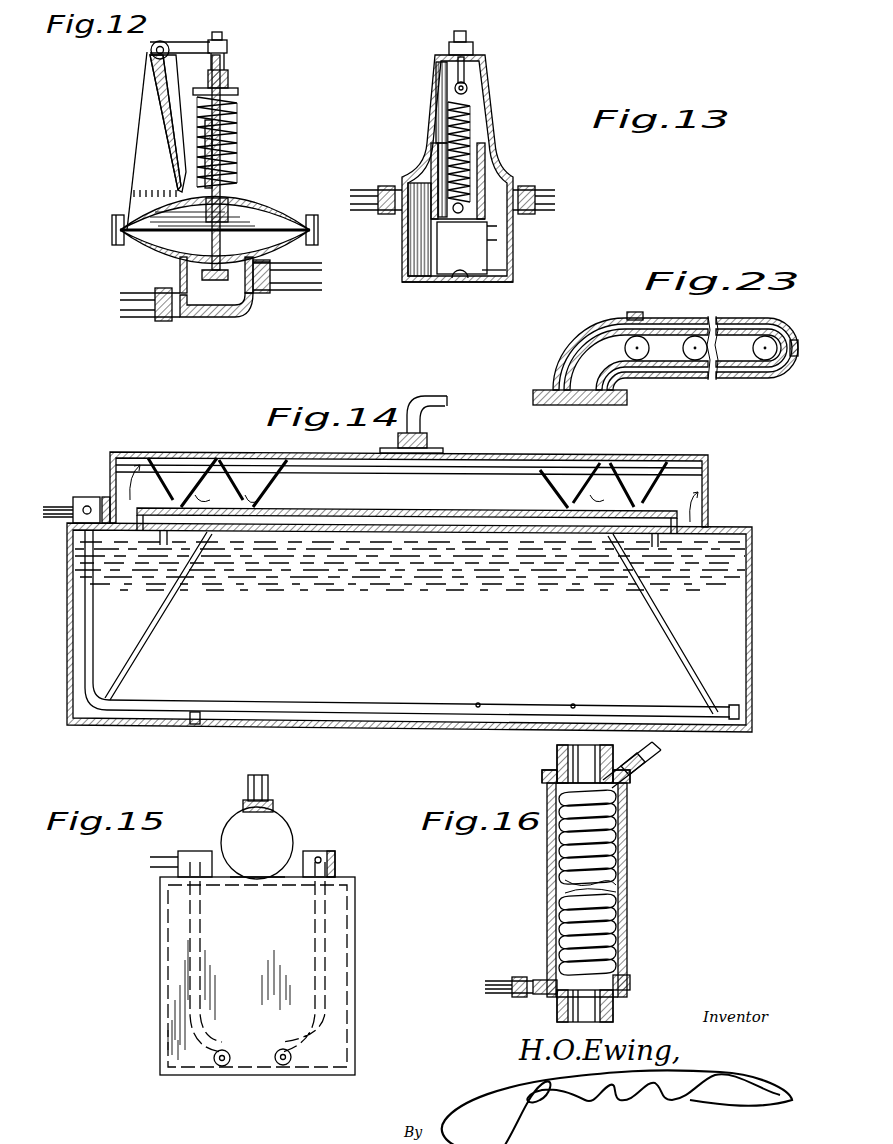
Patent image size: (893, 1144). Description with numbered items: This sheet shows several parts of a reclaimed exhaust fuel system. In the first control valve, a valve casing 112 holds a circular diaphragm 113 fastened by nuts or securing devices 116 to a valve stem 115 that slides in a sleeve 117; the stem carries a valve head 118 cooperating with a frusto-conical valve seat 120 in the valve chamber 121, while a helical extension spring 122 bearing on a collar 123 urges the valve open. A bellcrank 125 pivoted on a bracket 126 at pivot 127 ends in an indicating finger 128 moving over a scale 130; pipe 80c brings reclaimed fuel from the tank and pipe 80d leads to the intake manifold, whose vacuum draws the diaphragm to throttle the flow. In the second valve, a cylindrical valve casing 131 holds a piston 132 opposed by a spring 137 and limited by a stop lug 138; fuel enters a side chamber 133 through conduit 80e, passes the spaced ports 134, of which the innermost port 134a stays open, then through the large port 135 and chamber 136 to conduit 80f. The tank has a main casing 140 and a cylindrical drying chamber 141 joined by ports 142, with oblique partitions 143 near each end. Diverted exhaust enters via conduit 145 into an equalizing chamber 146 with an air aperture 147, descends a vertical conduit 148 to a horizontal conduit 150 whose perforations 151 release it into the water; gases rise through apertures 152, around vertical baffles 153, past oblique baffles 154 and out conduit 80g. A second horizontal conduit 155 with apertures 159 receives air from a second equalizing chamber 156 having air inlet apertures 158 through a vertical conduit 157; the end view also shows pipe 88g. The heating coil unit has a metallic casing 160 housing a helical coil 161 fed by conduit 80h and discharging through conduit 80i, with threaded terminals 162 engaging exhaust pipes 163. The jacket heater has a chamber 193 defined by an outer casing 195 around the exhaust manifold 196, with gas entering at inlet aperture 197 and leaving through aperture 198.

In FIG. 12, the valve casing 112 is at (255, 220).
In FIG. 12, the circular diaphragm 113 is at (283, 224).
In FIG. 12, the valve stem 115 is at (222, 129).
In FIG. 12, the nuts or securing devices 116 is at (228, 196).
In FIG. 12, the sleeve 117 is at (226, 160).
In FIG. 12, the valve head 118 is at (201, 276).
In FIG. 12, the frusto-conical valve seat 120 is at (214, 309).
In FIG. 12, the valve chamber 121 is at (241, 294).
In FIG. 12, the helical extension spring 122 is at (238, 104).
In FIG. 12, the collar 123 is at (232, 89).
In FIG. 12, the bellcrank 125 is at (151, 56).
In FIG. 12, the bracket 126 is at (145, 96).
In FIG. 12, the pivot 127 is at (165, 45).
In FIG. 12, the index or indicating finger 128 is at (168, 172).
In FIG. 12, the scale 130 is at (135, 194).
In FIG. 12, the pipe 80c is at (286, 288).
In FIG. 12, the pipe or conduit 80d is at (142, 309).
In FIG. 13, the cylindrical valve casing 131 is at (476, 115).
In FIG. 13, the piston 132 is at (474, 160).
In FIG. 13, the chamber 133 is at (498, 255).
In FIG. 13, the ports or apertures 134 is at (490, 240).
In FIG. 13, the innermost port 134a is at (507, 271).
In FIG. 13, the port 135 is at (425, 284).
In FIG. 13, the chamber 136 is at (418, 242).
In FIG. 13, the spring 137 is at (467, 100).
In FIG. 13, the stop lug 138 is at (465, 280).
In FIG. 13, the pipe or conduit 80e is at (555, 197).
In FIG. 13, the pipe or conduit 80f is at (363, 194).
In FIG. 23, the chamber 193 is at (748, 331).
In FIG. 23, the outer wall or casing 195 is at (727, 380).
In FIG. 23, the exhaust manifold 196 is at (677, 335).
In FIG. 23, the inlet aperture 197 is at (794, 368).
In FIG. 23, the aperture 198 is at (626, 316).
In FIG. 14, the main casing 140 is at (753, 678).
In FIG. 14, the cylindrical drying chamber 141 is at (524, 467).
In FIG. 15, the cylindrical drying chamber 141 is at (283, 833).
In FIG. 14, the apertures or ports 142 is at (138, 488).
In FIG. 14, the obliquely disposed partitions or plates 143 is at (170, 600).
In FIG. 14, the conduit 145 is at (53, 518).
In FIG. 15, the conduit 145 is at (160, 860).
In FIG. 14, the equalizing chamber 146 is at (100, 497).
In FIG. 15, the equalizing chamber 146 is at (204, 849).
In FIG. 14, the aperture 147 is at (86, 506).
In FIG. 15, the aperture 147 is at (224, 857).
In FIG. 14, the vertical conduit 148 is at (88, 634).
In FIG. 15, the vertical conduit 148 is at (190, 1008).
In FIG. 14, the horizontally-disposed conduit 150 is at (357, 703).
In FIG. 15, the horizontally-disposed conduit 150 is at (226, 1050).
In FIG. 14, the perforations 151 is at (208, 713).
In FIG. 15, the perforations 151 is at (221, 1066).
In FIG. 14, the apertures 152 is at (300, 545).
In FIG. 14, the vertical baffles 153 is at (165, 546).
In FIG. 14, the obliquely disposed baffles 154 is at (181, 457).
In FIG. 14, the second horizontally-disposed conduit or pipe 155 is at (478, 703).
In FIG. 15, the second horizontally-disposed conduit or pipe 155 is at (278, 1054).
In FIG. 14, the apertures 159 is at (578, 705).
In FIG. 15, the apertures 159 is at (285, 1065).
In FIG. 14, the conduit 80g is at (448, 402).
In FIG. 15, the second equalizing chamber 156 is at (337, 855).
In FIG. 15, the vertical conduit 157 is at (318, 963).
In FIG. 15, the air inlet apertures 158 is at (319, 856).
In FIG. 15, the pipe 88g is at (266, 784).
In FIG. 16, the metallic casing 160 is at (628, 840).
In FIG. 16, the helical coil 161 is at (624, 811).
In FIG. 16, the threaded terminals 162 is at (545, 781).
In FIG. 16, the exhaust pipes 163 is at (557, 750).
In FIG. 16, the conduit 80h is at (652, 752).
In FIG. 16, the conduit 80i is at (503, 989).